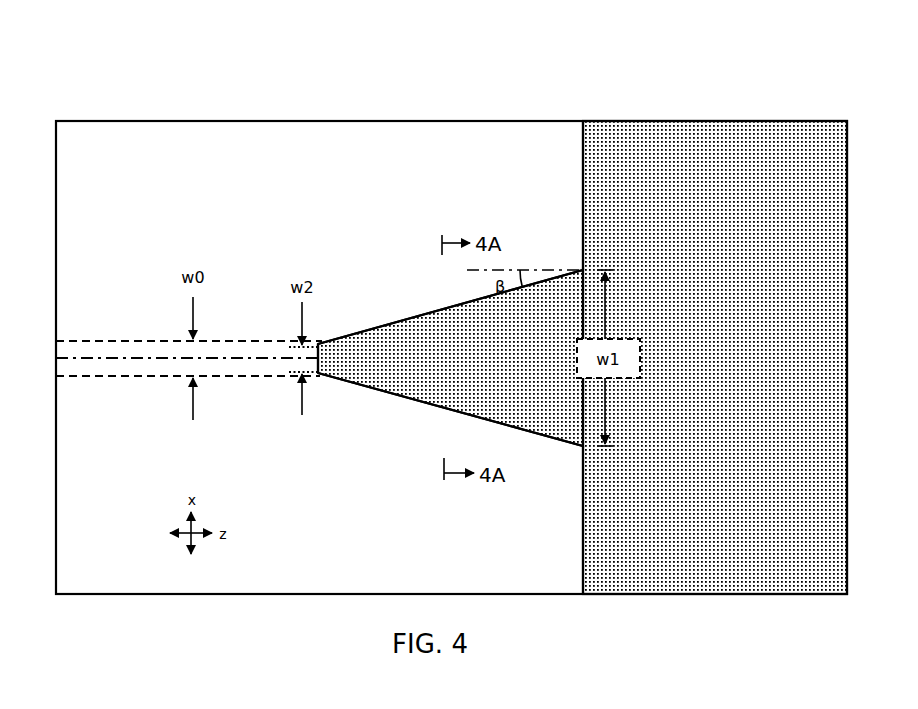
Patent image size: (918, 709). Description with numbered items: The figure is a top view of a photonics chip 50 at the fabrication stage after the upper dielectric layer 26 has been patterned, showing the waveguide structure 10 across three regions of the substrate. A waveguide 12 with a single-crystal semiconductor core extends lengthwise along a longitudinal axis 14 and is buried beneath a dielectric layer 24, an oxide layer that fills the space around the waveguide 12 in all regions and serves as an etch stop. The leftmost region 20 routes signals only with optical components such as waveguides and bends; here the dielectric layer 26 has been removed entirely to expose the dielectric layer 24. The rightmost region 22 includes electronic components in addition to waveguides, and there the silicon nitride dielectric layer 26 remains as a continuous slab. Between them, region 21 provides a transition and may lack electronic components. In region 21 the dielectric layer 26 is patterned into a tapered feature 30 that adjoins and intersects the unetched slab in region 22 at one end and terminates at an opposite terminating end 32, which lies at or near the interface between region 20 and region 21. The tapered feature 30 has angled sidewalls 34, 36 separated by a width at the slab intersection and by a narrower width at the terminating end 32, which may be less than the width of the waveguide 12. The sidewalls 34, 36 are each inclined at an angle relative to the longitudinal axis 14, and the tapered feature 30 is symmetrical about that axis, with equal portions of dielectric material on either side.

The waveguide structure 10 is at (183, 206).
The waveguide 12 is at (130, 370).
The longitudinal axis 14 is at (85, 360).
The region 20 is at (316, 107).
The region 21 is at (580, 107).
The region 22 is at (843, 107).
The dielectric layer 24 is at (91, 542).
The dielectric layer 26 is at (600, 213).
The tapered feature 30 is at (389, 400).
The terminating end 32 is at (310, 355).
The sidewall 34 is at (417, 317).
The sidewall 36 is at (428, 403).
The photonics chip 50 is at (133, 68).